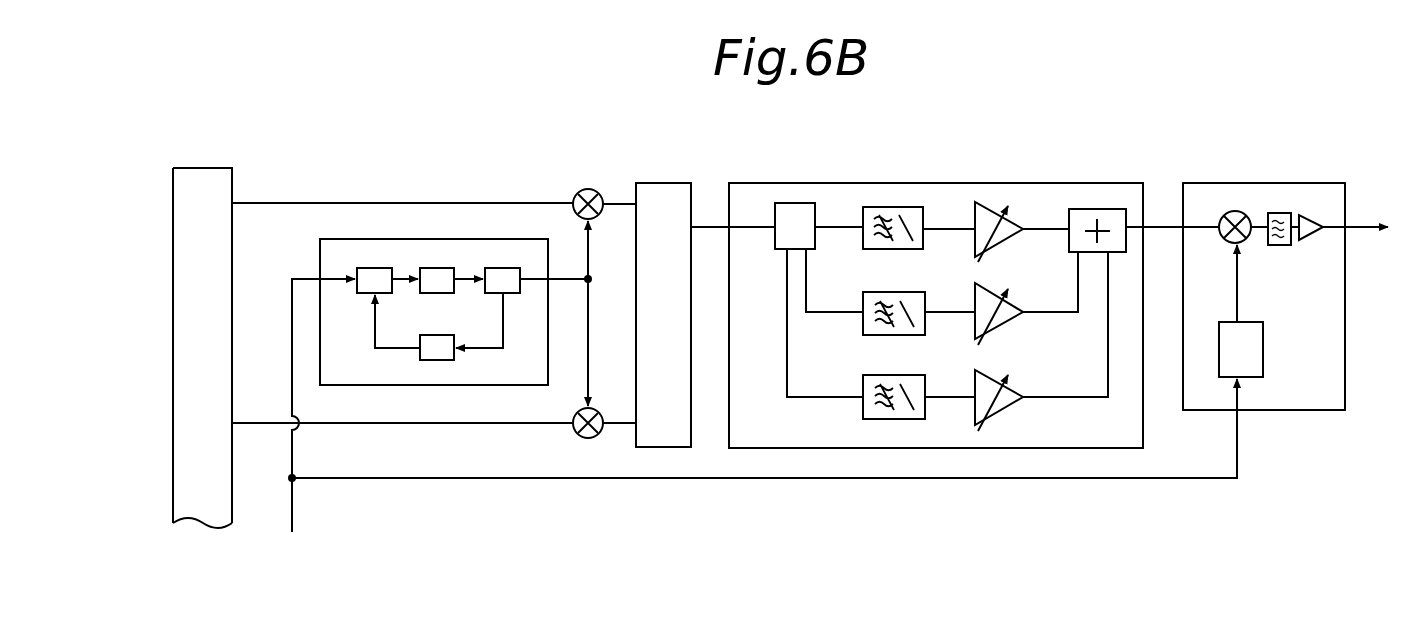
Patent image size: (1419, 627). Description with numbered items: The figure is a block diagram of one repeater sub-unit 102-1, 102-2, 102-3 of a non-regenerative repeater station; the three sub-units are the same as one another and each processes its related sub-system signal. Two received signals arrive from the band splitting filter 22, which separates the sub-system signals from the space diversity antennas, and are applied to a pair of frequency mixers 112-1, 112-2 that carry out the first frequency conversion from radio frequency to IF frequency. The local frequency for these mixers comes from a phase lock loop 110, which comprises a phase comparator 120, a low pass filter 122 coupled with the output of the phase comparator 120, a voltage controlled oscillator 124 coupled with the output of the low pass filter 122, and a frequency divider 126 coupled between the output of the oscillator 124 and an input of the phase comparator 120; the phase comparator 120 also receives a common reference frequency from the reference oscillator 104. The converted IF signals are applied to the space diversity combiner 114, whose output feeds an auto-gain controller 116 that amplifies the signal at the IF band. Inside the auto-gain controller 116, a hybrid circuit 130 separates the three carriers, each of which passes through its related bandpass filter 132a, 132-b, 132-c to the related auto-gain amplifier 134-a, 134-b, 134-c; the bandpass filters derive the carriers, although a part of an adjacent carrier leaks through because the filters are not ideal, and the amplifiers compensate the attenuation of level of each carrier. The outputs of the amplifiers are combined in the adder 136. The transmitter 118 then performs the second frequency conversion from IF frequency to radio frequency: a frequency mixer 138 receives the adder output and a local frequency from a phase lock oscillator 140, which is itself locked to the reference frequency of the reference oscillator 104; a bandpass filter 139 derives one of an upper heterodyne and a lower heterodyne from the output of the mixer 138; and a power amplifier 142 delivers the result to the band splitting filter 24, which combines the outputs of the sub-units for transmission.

The band splitting filter 22 is at (202, 348).
The phase lock loop 110 is at (357, 239).
The phase comparator 120 is at (380, 268).
The low pass filter 122 is at (440, 249).
The voltage controlled oscillator 124 is at (505, 249).
The frequency divider 126 is at (446, 360).
The frequency mixer 112-1 is at (588, 189).
The frequency mixer 112-2 is at (588, 438).
The space diversity combiner 114 is at (655, 183).
The auto-gain controller 116 is at (782, 183).
The hybrid circuit 130 is at (775, 240).
The bandpass filter 132a is at (865, 249).
The bandpass filter 132-b is at (863, 333).
The bandpass filter 132-c is at (882, 417).
The auto-gain amplifier 134-a is at (1033, 247).
The auto-gain amplifier 134-b is at (1013, 327).
The auto-gain amplifier 134-c is at (1013, 412).
The adder 136 is at (1073, 209).
The transmitter 118 is at (1243, 183).
The frequency mixer 138 is at (1235, 211).
The bandpass filter 139 is at (1279, 245).
The power amplifier 142 is at (1325, 200).
The phase lock oscillator 140 is at (1263, 349).
The band splitting filter 24 is at (1359, 229).
The reference oscillator 104 is at (336, 422).
The repeater sub-unit 102-1 is at (887, 495).
The repeater sub-unit 102-2 is at (864, 582).
The repeater sub-unit 102-3 is at (864, 605).